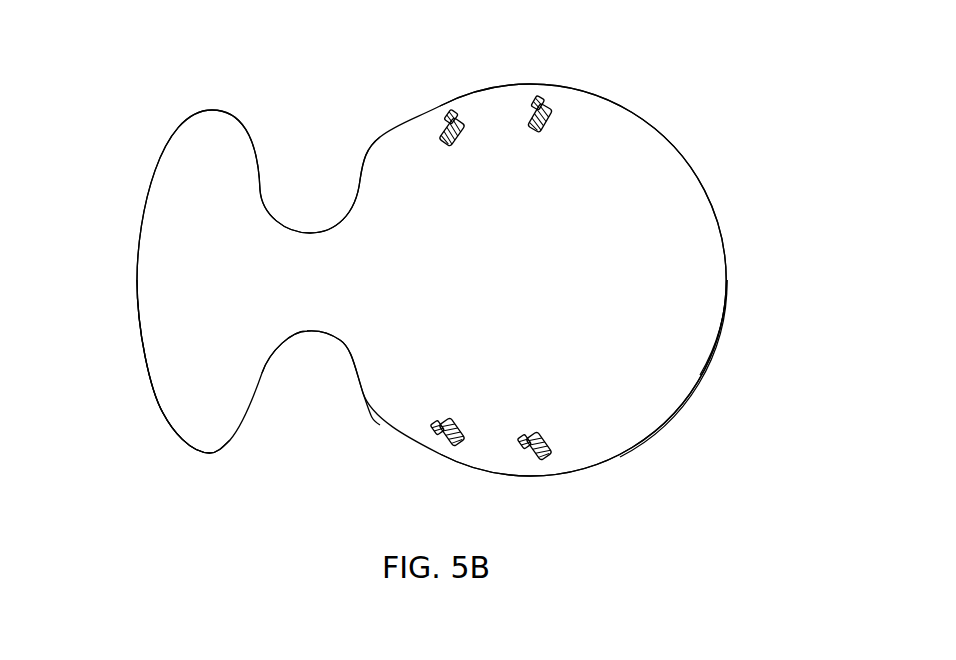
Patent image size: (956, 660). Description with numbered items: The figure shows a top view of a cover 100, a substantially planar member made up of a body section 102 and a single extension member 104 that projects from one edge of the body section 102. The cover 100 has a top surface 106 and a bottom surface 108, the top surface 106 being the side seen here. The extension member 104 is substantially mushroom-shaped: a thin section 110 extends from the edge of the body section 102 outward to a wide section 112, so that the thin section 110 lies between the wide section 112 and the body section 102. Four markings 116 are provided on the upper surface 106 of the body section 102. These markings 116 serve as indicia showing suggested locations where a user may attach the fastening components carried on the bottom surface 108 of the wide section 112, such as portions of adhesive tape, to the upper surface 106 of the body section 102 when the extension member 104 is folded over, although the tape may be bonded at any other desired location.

The cover 100 is at (322, 88).
The body section 102 is at (521, 282).
The extension member 104 is at (255, 282).
The top surface 106 is at (653, 355).
The bottom surface 108 is at (732, 338).
The thin section 110 is at (322, 310).
The wide section 112 is at (197, 413).
The markings 116 is at (455, 118).